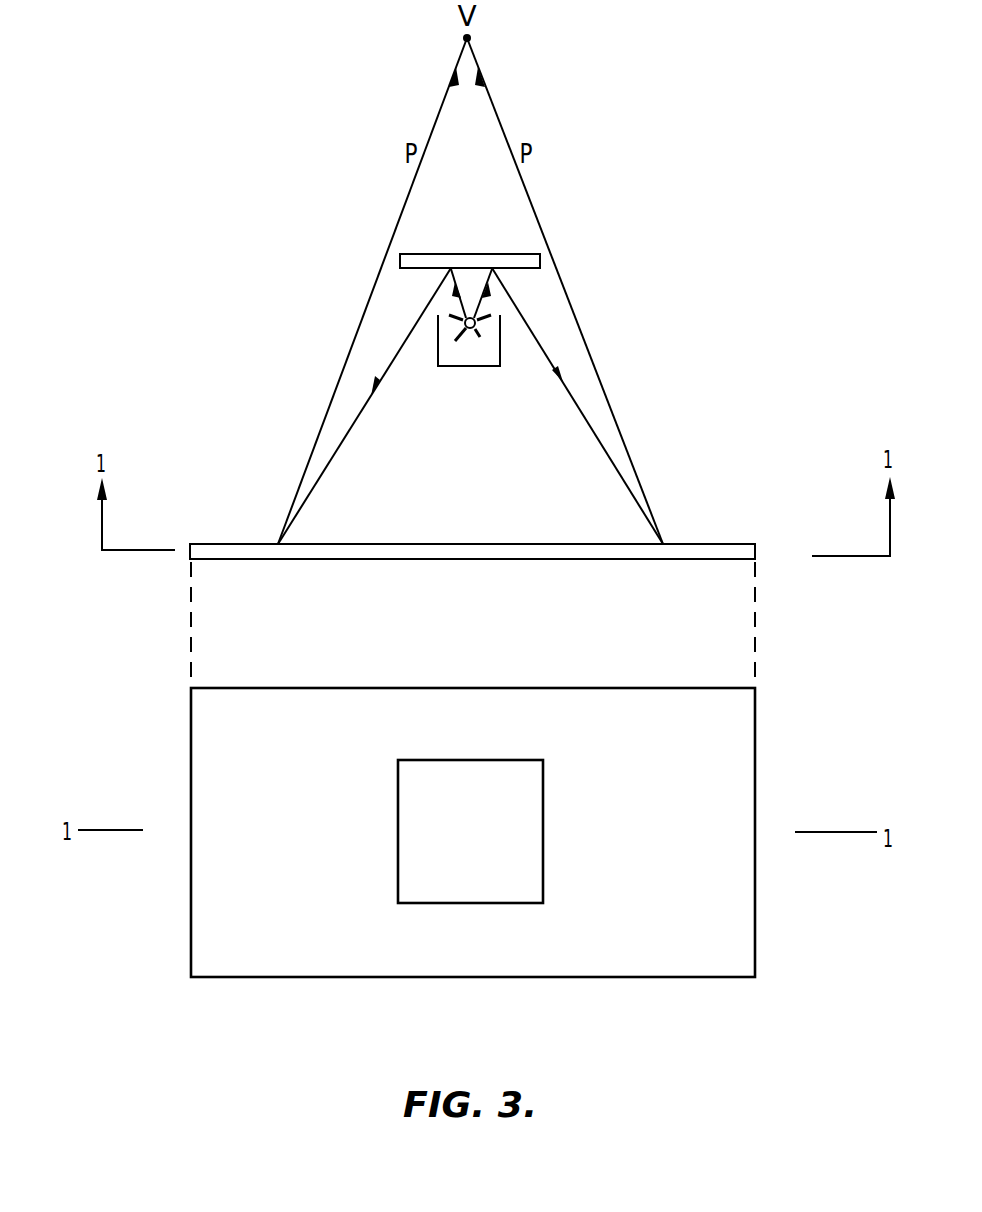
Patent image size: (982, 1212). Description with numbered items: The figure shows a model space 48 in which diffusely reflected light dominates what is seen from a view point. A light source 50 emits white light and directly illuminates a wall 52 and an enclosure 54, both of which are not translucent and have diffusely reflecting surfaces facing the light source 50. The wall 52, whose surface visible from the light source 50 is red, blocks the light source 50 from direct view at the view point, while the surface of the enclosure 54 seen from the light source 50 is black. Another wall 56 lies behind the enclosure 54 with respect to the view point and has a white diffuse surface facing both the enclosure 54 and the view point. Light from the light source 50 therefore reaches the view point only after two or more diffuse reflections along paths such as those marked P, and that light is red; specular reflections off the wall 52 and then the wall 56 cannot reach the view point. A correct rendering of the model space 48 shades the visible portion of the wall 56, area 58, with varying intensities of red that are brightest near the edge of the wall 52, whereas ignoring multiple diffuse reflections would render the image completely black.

The model space 48 is at (682, 170).
The light source 50 is at (470, 329).
The wall 52 is at (425, 254).
The enclosure 54 is at (487, 367).
The wall 56 is at (379, 544).
The area 58 is at (641, 957).